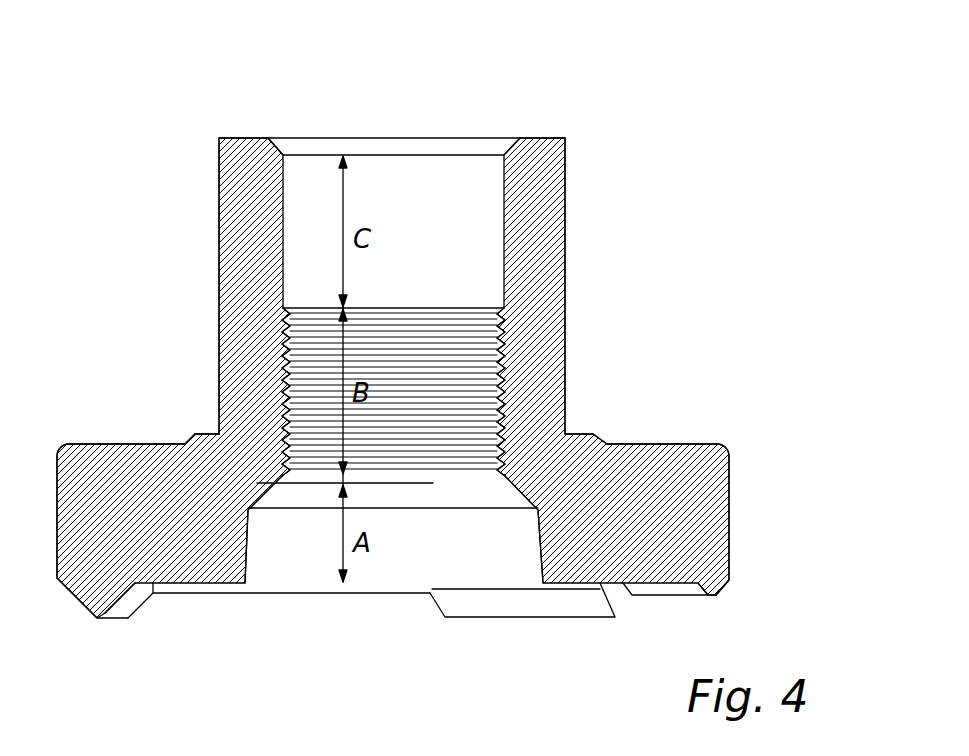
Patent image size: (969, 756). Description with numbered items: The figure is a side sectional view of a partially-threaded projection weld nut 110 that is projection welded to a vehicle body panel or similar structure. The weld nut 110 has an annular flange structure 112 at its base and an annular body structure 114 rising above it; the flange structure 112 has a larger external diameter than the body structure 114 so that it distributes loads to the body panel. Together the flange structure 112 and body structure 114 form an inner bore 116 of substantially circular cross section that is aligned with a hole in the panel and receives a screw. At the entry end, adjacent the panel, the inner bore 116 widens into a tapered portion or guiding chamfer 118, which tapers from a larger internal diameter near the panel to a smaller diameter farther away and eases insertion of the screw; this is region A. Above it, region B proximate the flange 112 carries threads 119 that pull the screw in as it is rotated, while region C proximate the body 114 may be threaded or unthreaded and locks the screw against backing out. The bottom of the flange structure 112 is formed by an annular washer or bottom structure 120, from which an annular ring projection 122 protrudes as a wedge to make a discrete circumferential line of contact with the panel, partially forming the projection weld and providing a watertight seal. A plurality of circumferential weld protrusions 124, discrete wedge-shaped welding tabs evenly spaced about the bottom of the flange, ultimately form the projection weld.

The partially-threaded projection weld nut 110 is at (555, 108).
The annular flange structure 112 is at (729, 507).
The annular body structure 114 is at (566, 292).
The inner bore 116 is at (318, 357).
The tapered portion (guiding chamfer) 118 is at (288, 543).
The threads 119 is at (458, 395).
The annular washer or bottom structure 120 is at (655, 590).
The annular ring projection 122 is at (720, 592).
The circumferential weld protrusions (welding tabs) 124 is at (532, 602).